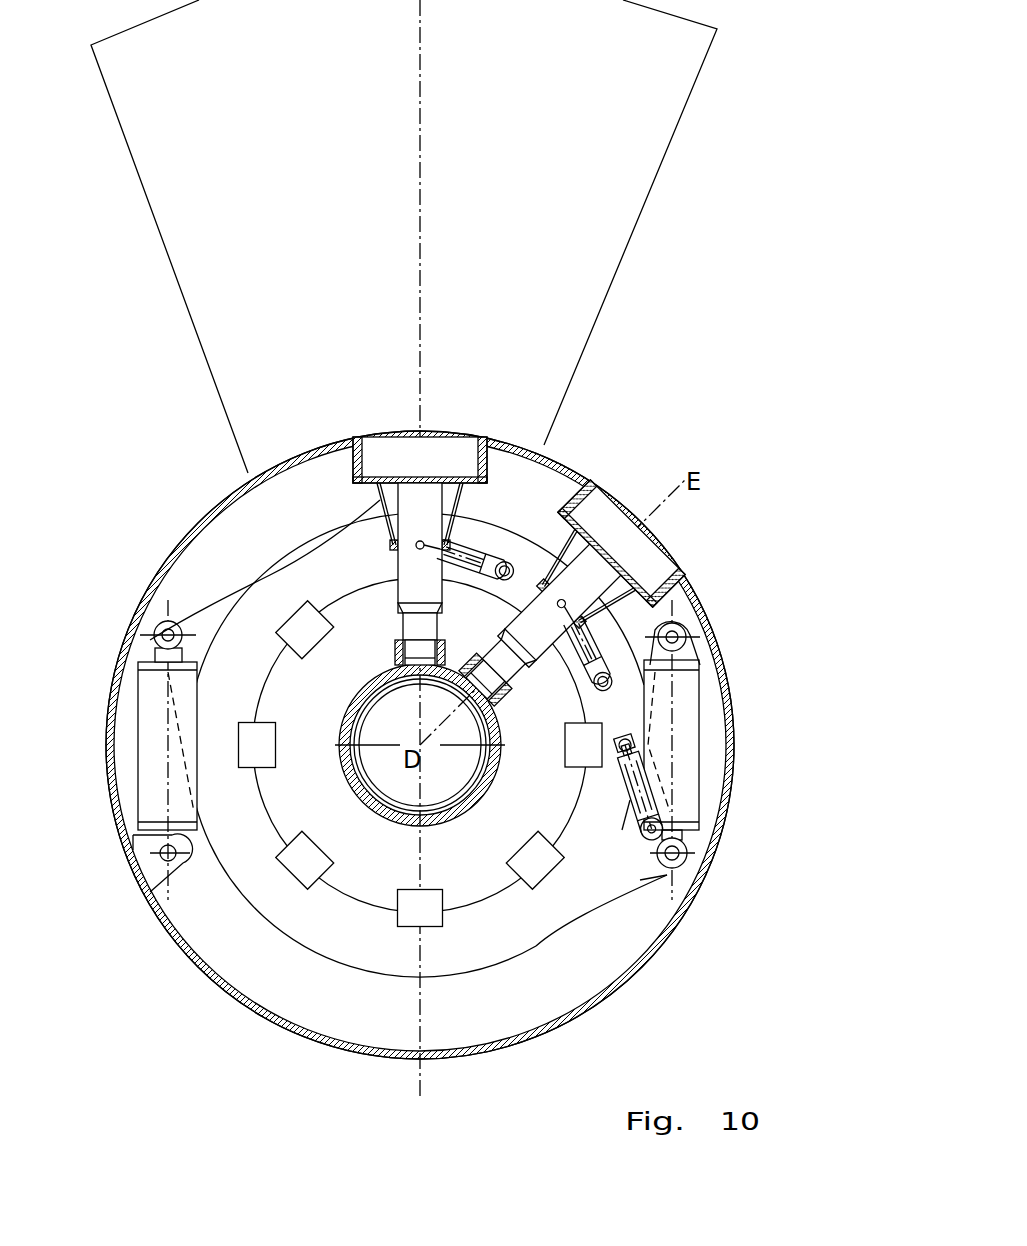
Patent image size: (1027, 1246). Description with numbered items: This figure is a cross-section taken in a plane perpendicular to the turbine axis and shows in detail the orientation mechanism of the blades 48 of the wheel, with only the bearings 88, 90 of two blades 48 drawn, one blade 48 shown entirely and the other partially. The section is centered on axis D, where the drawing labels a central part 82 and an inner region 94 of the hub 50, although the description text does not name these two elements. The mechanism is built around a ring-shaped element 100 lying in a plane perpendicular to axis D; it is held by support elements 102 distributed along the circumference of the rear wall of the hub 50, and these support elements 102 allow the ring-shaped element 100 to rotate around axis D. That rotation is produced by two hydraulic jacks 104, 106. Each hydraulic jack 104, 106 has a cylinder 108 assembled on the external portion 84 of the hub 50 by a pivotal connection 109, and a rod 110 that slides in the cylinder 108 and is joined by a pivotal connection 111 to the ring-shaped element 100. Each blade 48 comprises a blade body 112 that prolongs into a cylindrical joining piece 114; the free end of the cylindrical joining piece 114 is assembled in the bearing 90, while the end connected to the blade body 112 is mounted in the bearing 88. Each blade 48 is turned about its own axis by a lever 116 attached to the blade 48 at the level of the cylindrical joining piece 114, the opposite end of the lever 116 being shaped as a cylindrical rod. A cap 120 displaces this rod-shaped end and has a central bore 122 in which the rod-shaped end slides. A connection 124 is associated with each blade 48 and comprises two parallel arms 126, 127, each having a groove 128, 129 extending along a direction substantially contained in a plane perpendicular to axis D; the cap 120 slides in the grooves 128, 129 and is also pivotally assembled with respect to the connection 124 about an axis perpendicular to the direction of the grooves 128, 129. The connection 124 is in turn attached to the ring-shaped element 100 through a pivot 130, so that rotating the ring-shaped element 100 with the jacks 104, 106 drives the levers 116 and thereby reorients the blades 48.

The blade 48 is at (448, 505).
The hub 50 is at (644, 970).
The hub 82 is at (360, 785).
The external portion 84 is at (592, 1010).
The bearing 88 is at (493, 437).
The bearing 90 is at (393, 652).
The bore 94 is at (440, 757).
The ring-shaped element 100 is at (543, 905).
The support element 102 is at (267, 737).
The hydraulic jack 104 is at (170, 790).
The hydraulic jack 106 is at (683, 748).
The cylinder 108 is at (137, 750).
The pivotal connection 109 is at (128, 862).
The rod 110 is at (155, 655).
The pivotal connection 111 is at (158, 628).
The blade body 112 is at (545, 172).
The cylindrical joining piece 114 is at (412, 590).
The lever 116 is at (378, 503).
The cap 120 is at (635, 722).
The central bore 122 is at (605, 740).
The connection 124 is at (603, 790).
The arm 126 is at (605, 762).
The arm 127 is at (628, 797).
The groove 128 is at (615, 738).
The groove 129 is at (640, 775).
The pivot 130 is at (597, 822).